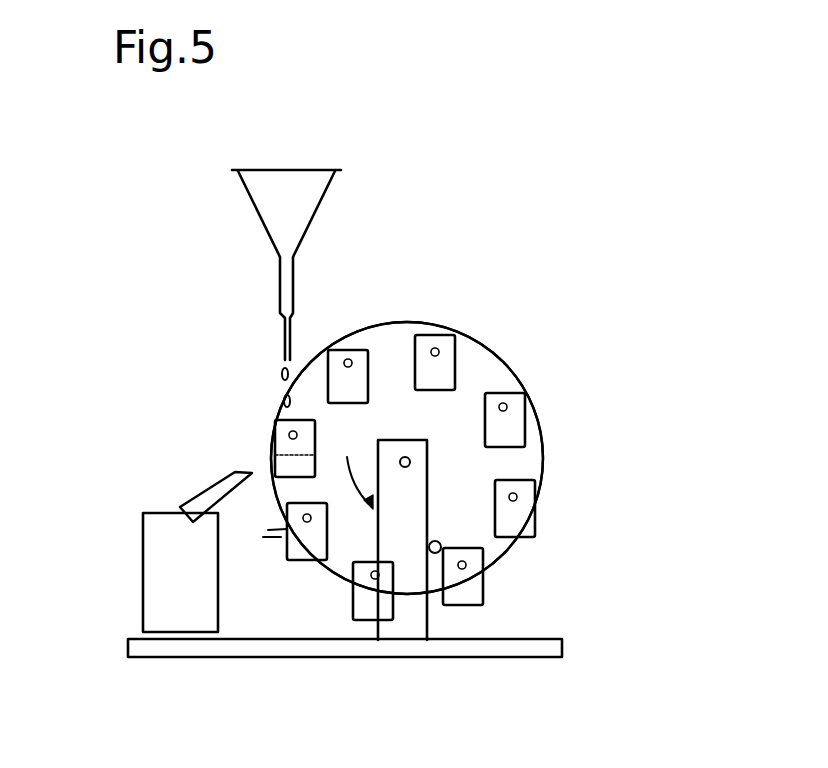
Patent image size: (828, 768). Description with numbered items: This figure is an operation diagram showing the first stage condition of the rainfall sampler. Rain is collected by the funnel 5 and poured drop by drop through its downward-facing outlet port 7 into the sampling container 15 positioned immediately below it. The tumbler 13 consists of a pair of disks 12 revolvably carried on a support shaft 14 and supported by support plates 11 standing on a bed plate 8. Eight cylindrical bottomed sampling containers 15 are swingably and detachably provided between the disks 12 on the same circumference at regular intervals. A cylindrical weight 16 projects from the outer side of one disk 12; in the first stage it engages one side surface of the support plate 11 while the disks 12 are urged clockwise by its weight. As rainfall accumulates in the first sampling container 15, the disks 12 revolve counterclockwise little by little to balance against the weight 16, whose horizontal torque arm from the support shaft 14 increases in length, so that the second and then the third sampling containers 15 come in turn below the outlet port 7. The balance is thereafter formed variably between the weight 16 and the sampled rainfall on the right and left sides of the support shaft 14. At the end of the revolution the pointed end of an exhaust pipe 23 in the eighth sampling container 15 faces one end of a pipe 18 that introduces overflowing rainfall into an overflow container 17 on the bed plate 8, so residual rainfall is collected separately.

The funnel 5 is at (322, 200).
The outlet port 7 is at (274, 363).
The bed plate 8 is at (527, 638).
The support plate 11 is at (418, 520).
The disk 12 is at (527, 465).
The tumbler 13 is at (407, 458).
The support shaft 14 is at (410, 458).
The sampling container 15 is at (272, 438).
The weight 16 is at (430, 560).
The overflow container 17 is at (143, 555).
The pipe 18 is at (212, 480).
The exhaust pipe 23 is at (265, 537).